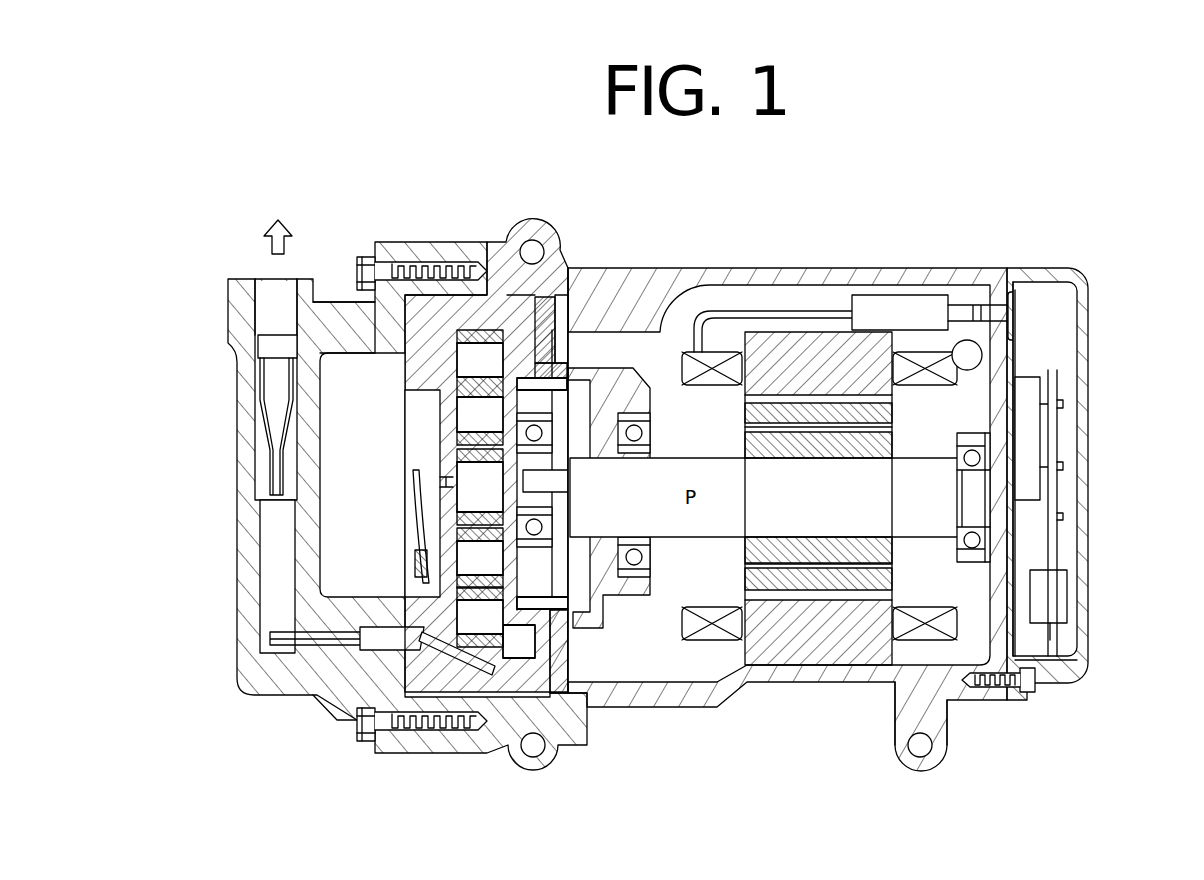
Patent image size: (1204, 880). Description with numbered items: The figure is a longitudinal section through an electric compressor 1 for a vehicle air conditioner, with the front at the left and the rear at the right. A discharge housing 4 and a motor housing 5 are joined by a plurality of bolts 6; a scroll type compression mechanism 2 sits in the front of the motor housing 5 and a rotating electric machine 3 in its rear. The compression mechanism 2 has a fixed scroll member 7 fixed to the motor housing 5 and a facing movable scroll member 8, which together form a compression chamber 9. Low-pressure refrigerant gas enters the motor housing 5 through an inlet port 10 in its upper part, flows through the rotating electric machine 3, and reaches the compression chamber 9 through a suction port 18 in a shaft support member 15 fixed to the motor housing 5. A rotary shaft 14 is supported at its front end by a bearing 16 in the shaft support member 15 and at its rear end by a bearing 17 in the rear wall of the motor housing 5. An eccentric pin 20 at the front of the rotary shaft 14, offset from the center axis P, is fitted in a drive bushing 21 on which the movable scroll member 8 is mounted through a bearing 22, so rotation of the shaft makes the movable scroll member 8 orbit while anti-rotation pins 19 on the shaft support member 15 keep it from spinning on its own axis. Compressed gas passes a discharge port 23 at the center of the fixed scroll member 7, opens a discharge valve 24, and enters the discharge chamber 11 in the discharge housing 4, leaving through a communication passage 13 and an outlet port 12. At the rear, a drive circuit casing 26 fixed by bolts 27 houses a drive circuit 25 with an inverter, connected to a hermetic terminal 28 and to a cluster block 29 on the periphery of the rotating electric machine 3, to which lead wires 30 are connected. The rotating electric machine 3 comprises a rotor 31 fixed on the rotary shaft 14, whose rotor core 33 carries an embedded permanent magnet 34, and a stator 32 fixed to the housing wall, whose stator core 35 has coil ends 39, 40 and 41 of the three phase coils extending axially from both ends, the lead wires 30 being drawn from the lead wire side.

The electric compressor 1 is at (836, 228).
The scroll type compression mechanism 2 is at (436, 443).
The rotating electric machine 3 is at (681, 655).
The discharge housing 4 is at (292, 697).
The motor housing 5 is at (430, 758).
The bolts 6 is at (358, 255).
The fixed scroll member 7 is at (395, 337).
The movable scroll member 8 is at (500, 330).
The compression chamber 9 is at (487, 626).
The inlet port 10 is at (965, 330).
The discharge chamber 11 is at (351, 391).
The outlet port 12 is at (278, 292).
The communication passage 13 is at (263, 320).
The rotary shaft 14 is at (690, 458).
The shaft support member 15 is at (605, 606).
The bearing 16 is at (656, 545).
The bearing 17 is at (955, 545).
The suction port 18 is at (590, 690).
The anti-rotation pins 19 is at (566, 378).
The eccentric pin 20 is at (550, 458).
The drive bushing 21 is at (570, 402).
The bearing 22 is at (580, 500).
The discharge port 23 is at (440, 478).
The discharge valve 24 is at (430, 512).
The drive circuit 25 is at (1065, 495).
The drive circuit casing 26 is at (1090, 605).
The bolts 27 is at (1000, 694).
The hermetic terminal 28 is at (1015, 286).
The cluster block 29 is at (922, 296).
The lead wires 30 is at (722, 308).
The rotor 31 is at (742, 575).
The stator 32 is at (738, 653).
The rotor core 33 is at (885, 444).
The permanent magnet 34 is at (896, 420).
The stator core 35 is at (822, 648).
The coil ends 39 is at (891, 744).
The coil ends 40 is at (921, 719).
The coil ends 41 is at (915, 735).